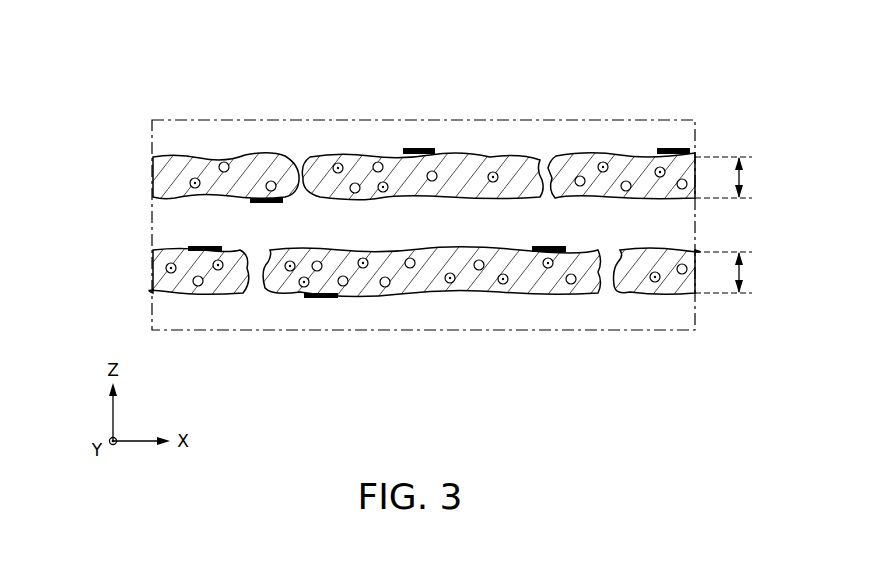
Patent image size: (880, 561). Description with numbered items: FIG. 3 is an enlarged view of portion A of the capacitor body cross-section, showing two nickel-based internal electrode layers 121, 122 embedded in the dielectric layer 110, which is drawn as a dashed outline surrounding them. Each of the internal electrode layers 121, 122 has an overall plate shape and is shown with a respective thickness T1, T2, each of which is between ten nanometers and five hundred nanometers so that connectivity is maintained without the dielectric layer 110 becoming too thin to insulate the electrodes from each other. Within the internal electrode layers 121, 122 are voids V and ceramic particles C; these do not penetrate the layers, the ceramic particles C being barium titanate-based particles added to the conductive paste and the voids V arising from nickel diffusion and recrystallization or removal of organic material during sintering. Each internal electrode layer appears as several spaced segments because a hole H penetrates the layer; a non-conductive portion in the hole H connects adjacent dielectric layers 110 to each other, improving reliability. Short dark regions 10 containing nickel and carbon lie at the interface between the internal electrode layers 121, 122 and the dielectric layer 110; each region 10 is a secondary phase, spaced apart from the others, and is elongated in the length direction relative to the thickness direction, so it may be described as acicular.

The dielectric layer 110 is at (609, 126).
The internal electrode layer 122 is at (135, 176).
The internal electrode layer 121 is at (135, 276).
The region containing nickel and carbon 10 is at (420, 147).
The ceramic particle C is at (194, 178).
The void V is at (378, 162).
The hole H is at (545, 175).
The thickness of internal electrode layer T1 is at (731, 272).
The thickness of internal electrode layer T2 is at (731, 177).
The portion A is at (415, 434).